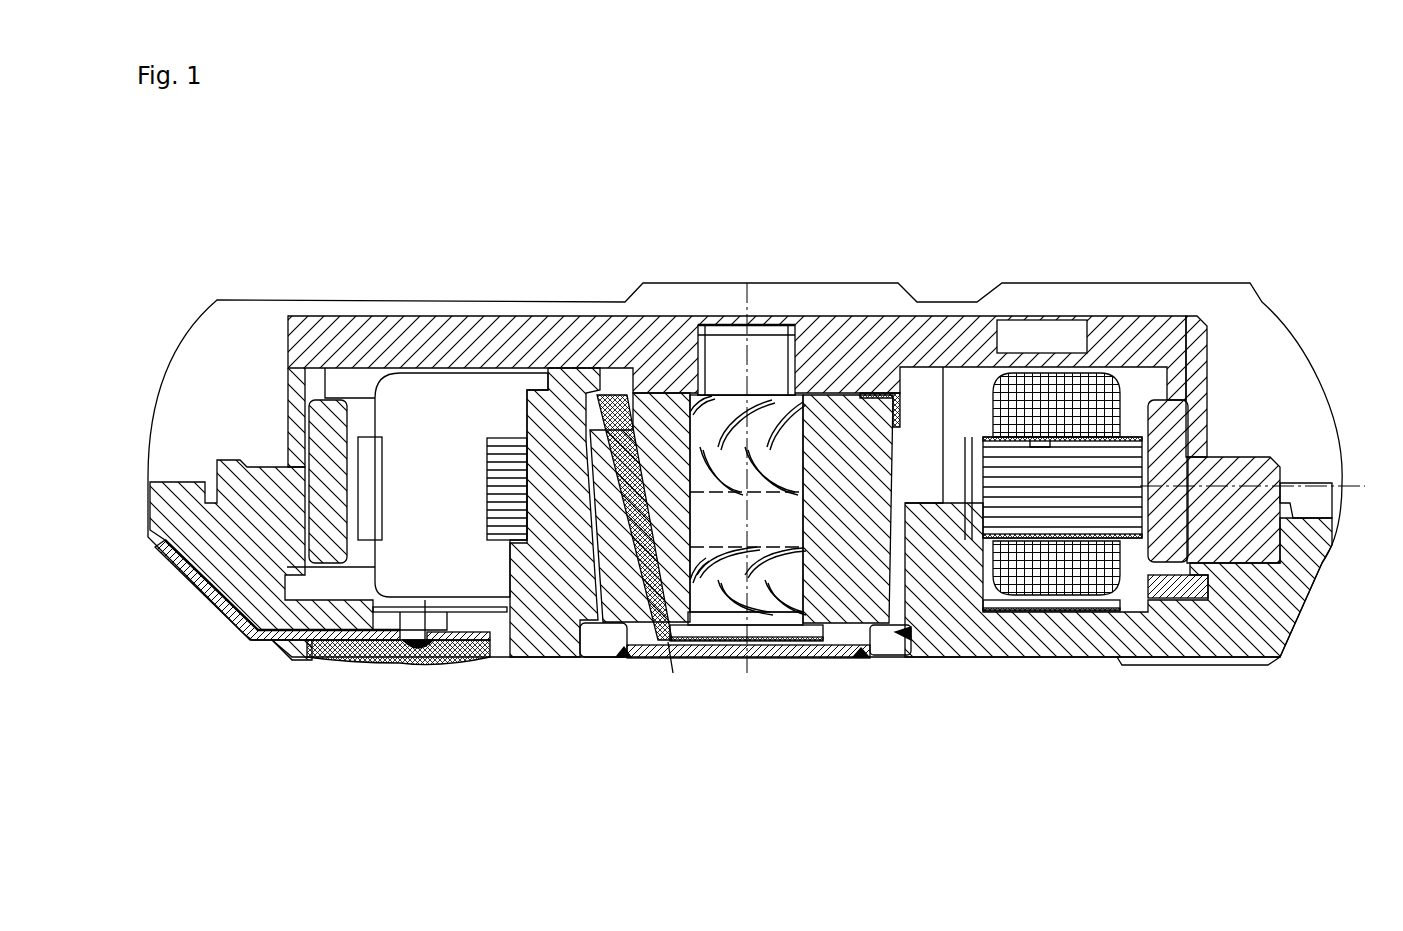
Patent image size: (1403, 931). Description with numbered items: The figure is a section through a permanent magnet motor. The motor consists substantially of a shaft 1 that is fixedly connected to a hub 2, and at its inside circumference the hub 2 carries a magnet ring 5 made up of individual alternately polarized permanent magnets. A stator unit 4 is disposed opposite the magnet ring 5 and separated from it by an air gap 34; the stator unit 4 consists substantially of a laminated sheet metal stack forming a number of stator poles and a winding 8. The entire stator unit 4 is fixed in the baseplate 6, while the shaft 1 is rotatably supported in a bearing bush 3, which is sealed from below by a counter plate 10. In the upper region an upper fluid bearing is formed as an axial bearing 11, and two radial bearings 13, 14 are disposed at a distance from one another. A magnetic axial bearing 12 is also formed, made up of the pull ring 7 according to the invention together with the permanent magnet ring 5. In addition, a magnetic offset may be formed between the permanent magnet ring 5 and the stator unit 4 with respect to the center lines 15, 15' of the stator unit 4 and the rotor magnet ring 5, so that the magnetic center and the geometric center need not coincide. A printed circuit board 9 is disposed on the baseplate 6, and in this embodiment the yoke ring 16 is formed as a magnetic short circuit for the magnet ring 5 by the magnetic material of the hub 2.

The shaft 1 is at (765, 520).
The hub 2 is at (917, 360).
The bearing bush 3 is at (865, 570).
The stator unit 4 is at (1030, 507).
The magnet ring 5 is at (324, 460).
The baseplate 6 is at (537, 615).
The pull ring 7 is at (1190, 557).
The winding 8 is at (1073, 565).
The printed circuit board 9 is at (283, 637).
The counter plate 10 is at (812, 636).
The axial bearing 11 is at (840, 393).
The magnetic axial bearing 12 is at (1167, 567).
The radial bearing 13 is at (730, 423).
The radial bearing 14 is at (735, 587).
The center line 15 is at (1331, 653).
The center line 15' is at (1252, 308).
The yoke ring 16 is at (1203, 405).
The air gap 34 is at (1145, 403).